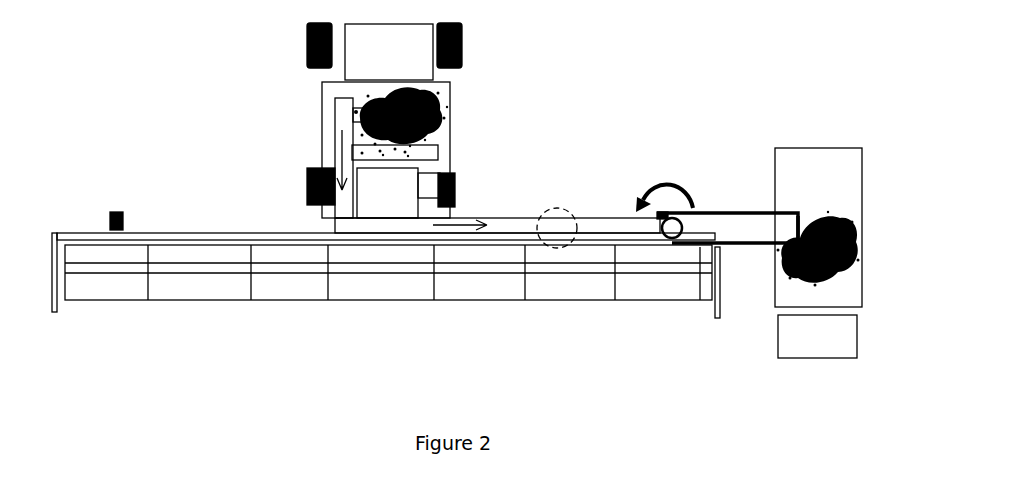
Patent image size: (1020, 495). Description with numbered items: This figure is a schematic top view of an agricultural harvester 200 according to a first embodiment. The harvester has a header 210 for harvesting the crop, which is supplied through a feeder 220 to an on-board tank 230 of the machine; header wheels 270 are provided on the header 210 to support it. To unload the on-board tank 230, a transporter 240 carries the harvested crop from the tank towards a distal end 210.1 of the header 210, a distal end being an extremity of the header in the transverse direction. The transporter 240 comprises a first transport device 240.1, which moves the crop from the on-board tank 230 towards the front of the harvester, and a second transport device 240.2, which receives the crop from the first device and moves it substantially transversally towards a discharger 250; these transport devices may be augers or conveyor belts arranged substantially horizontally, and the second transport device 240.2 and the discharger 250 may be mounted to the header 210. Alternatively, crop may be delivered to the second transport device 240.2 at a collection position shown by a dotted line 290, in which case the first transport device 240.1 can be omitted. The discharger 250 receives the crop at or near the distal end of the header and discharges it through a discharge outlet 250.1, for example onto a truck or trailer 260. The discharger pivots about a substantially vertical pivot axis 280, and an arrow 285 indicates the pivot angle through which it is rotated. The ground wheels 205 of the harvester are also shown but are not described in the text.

The agricultural harvester 200 is at (258, 104).
The wheels 205 is at (306, 47).
The header 210 is at (175, 288).
The distal end of the header 210.1 is at (662, 330).
The feeder 220 is at (398, 185).
The on-board tank 230 is at (433, 107).
The transporter 240 is at (343, 208).
The first transport device 240.1 is at (342, 203).
The second transport device 240.2 is at (557, 207).
The discharger 250 is at (743, 223).
The discharge outlet 250.1 is at (797, 227).
The truck or trailer 260 is at (833, 168).
The header wheels 270 is at (112, 212).
The pivot axis 280 is at (683, 217).
The pivot angle arrow 285 is at (645, 180).
The collection position 290 is at (507, 228).